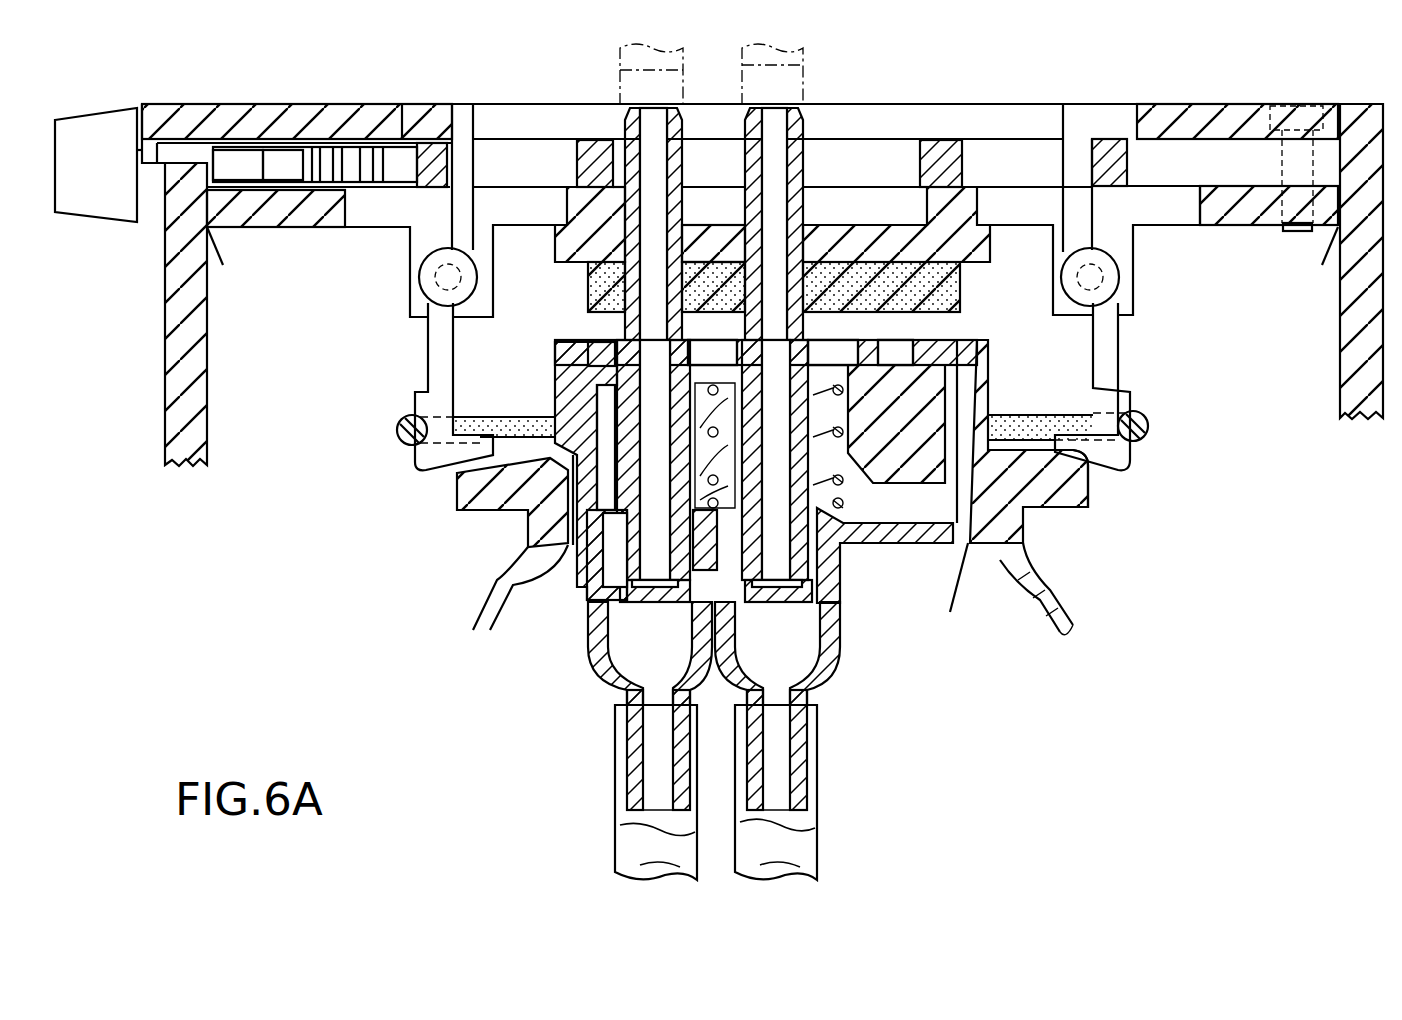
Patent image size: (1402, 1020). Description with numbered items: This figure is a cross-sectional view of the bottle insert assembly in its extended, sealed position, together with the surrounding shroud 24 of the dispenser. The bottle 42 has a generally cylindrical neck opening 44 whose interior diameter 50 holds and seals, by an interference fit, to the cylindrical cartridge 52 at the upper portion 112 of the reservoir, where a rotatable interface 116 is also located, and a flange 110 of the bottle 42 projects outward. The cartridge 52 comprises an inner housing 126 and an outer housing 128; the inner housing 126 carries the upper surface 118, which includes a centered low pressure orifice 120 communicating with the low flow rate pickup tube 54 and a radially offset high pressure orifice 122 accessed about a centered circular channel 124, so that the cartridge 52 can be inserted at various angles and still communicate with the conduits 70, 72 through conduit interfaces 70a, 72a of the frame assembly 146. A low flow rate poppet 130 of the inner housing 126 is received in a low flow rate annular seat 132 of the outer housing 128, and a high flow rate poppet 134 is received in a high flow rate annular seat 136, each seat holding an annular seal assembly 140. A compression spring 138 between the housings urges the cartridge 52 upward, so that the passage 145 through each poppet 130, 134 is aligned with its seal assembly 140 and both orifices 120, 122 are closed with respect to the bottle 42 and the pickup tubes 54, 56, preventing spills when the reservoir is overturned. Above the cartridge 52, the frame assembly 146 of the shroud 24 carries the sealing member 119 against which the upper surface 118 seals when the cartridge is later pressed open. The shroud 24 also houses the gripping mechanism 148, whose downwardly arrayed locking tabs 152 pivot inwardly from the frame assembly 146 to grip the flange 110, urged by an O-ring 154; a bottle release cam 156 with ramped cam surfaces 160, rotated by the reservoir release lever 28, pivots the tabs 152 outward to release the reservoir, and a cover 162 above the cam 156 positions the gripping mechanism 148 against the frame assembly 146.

The shroud 24 is at (207, 416).
The reservoir release lever 28 is at (107, 212).
The bottle 42 is at (1068, 632).
The neck opening 44 is at (985, 396).
The interior diameter 50 is at (990, 360).
The cartridge 52 is at (935, 545).
The low flow rate pickup tube 54 is at (822, 850).
The high flow rate pickup tube 56 is at (625, 852).
The conduit 70 is at (806, 54).
The conduit interface 70a is at (808, 130).
The conduit 72 is at (620, 56).
The conduit interface 72a is at (685, 135).
The flange 110 is at (1088, 495).
The upper portion 112 is at (1060, 580).
The rotatable interface 116 is at (600, 396).
The upper surface 118 is at (935, 332).
The sealing member 119 is at (962, 290).
The low pressure orifice 120 is at (785, 342).
The high pressure orifice 122 is at (648, 345).
The channel 124 is at (668, 342).
The inner housing 126 is at (888, 468).
The outer housing 128 is at (970, 550).
The low flow rate poppet 130 is at (808, 486).
The low flow rate annular seat 132 is at (845, 590).
The high flow rate poppet 134 is at (630, 492).
The high flow rate annular seat 136 is at (590, 578).
The compression spring 138 is at (717, 445).
The annular seal assembly 140 is at (714, 653).
The passage 145 is at (645, 600).
The frame assembly 146 is at (1240, 230).
The gripping mechanism 148 is at (385, 195).
The locking tabs 152 is at (420, 361).
The O-ring 154 is at (400, 442).
The bottle release cam 156 is at (597, 140).
The cam surfaces 160 is at (529, 178).
The cover 162 is at (1165, 102).